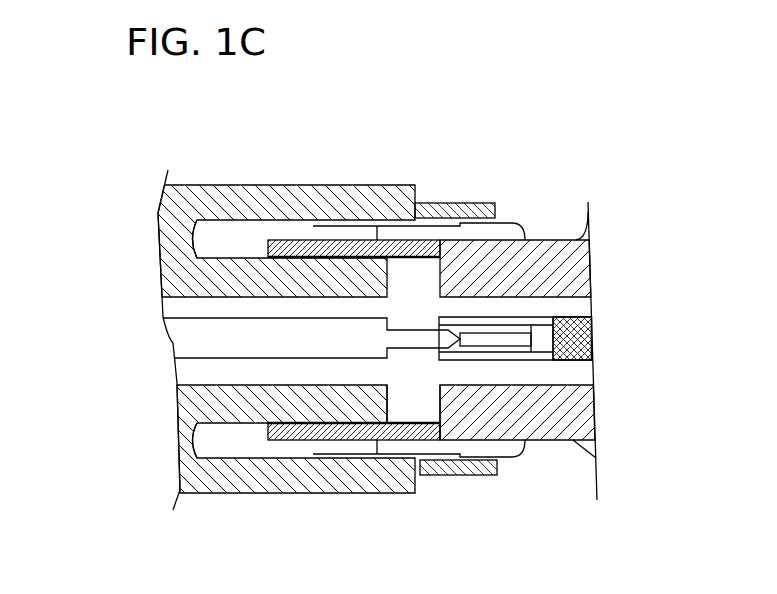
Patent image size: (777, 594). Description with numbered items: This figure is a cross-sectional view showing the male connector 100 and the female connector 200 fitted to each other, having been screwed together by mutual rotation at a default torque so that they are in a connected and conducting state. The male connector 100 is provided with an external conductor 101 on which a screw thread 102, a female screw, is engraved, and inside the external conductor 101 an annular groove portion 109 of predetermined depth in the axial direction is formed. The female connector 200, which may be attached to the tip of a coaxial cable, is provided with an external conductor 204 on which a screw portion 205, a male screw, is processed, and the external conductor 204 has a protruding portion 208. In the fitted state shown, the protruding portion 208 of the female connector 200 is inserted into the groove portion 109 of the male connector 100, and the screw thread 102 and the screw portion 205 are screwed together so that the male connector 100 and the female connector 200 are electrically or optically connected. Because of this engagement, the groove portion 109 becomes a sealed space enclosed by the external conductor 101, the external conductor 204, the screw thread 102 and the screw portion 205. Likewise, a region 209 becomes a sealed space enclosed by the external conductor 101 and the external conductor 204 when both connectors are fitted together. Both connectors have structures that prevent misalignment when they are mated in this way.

The male connector 100 is at (285, 307).
The external conductor 101 is at (172, 232).
The screw thread 102 is at (430, 223).
The groove portion 109 is at (218, 250).
The female connector 200 is at (478, 334).
The external conductor 204 is at (566, 255).
The screw portion 205 is at (505, 223).
The protruding portion 208 is at (272, 243).
The region 209 is at (412, 393).